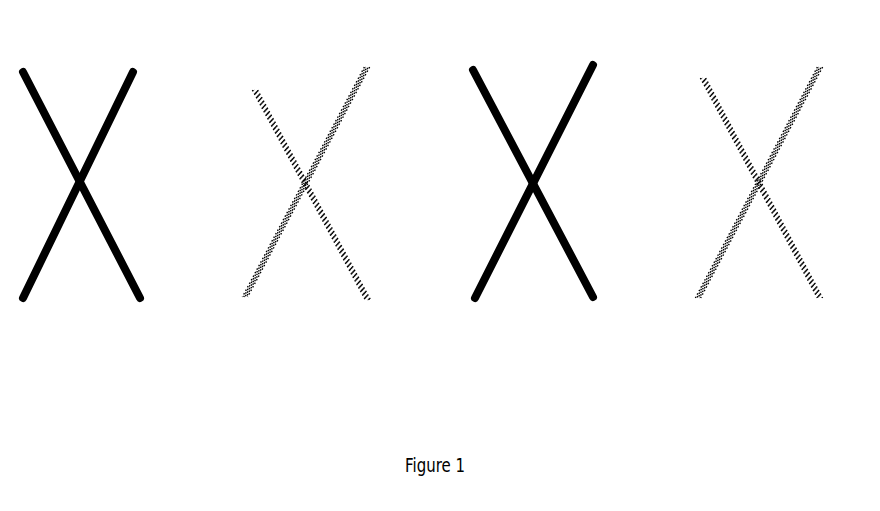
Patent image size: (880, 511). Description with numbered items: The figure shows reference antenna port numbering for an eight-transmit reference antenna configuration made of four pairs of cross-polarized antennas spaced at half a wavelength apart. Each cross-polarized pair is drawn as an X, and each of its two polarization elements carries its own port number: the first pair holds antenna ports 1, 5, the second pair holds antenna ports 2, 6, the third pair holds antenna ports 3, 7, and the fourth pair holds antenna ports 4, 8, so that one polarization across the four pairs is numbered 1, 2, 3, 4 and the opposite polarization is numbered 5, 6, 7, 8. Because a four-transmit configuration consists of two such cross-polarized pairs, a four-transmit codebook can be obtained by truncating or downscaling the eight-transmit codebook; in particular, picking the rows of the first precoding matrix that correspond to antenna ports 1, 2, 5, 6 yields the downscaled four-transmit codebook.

The reference antenna port 1 is at (81, 171).
The reference antenna port 2 is at (301, 169).
The reference antenna port 3 is at (532, 166).
The reference antenna port 4 is at (752, 162).
The reference antenna port 5 is at (90, 171).
The reference antenna port 6 is at (328, 168).
The reference antenna port 7 is at (550, 165).
The reference antenna port 8 is at (777, 166).